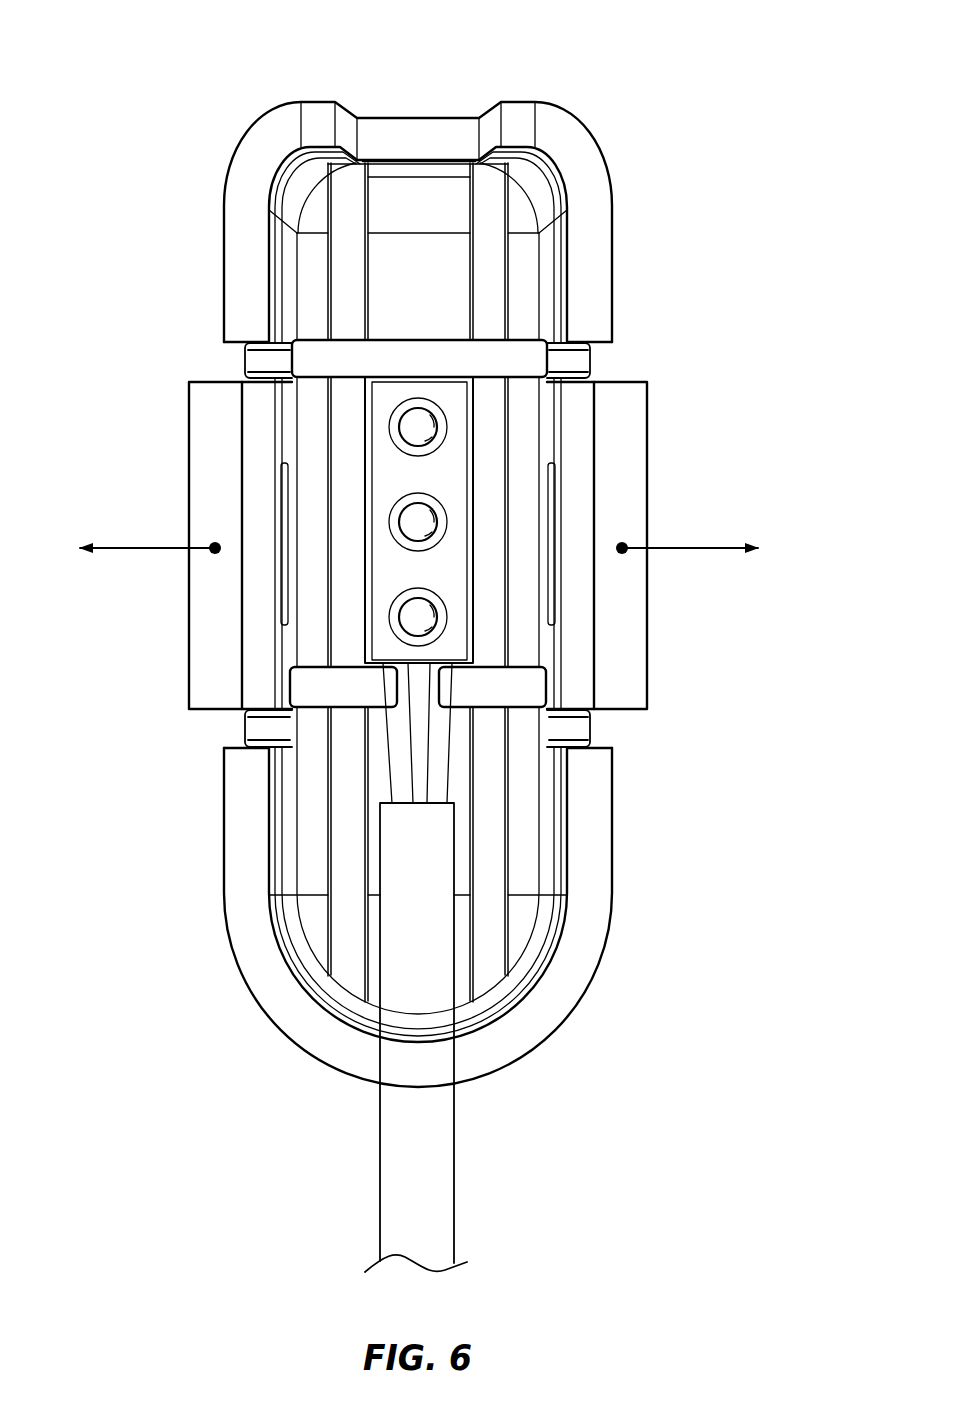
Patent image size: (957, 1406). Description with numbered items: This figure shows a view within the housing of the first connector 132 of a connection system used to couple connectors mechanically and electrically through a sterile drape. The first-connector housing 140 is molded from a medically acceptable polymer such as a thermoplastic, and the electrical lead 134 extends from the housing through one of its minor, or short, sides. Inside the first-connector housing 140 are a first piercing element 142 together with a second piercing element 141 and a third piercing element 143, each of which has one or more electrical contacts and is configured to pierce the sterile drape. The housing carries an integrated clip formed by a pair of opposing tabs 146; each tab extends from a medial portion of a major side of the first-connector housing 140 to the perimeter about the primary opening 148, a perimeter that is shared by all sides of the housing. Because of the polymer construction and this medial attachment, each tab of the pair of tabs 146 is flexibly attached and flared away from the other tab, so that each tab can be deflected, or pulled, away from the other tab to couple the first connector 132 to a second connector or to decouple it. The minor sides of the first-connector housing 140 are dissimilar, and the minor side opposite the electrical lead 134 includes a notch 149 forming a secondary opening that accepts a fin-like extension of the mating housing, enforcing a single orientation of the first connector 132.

The first connector 132 is at (410, 636).
The electrical lead 134 is at (440, 1167).
The first-connector housing 140 is at (376, 544).
The second piercing element 141 is at (416, 427).
The first piercing element 142 is at (416, 522).
The third piercing element 143 is at (418, 617).
The pair of tabs 146 is at (203, 670).
The primary opening 148 is at (525, 282).
The notch 149 is at (430, 122).